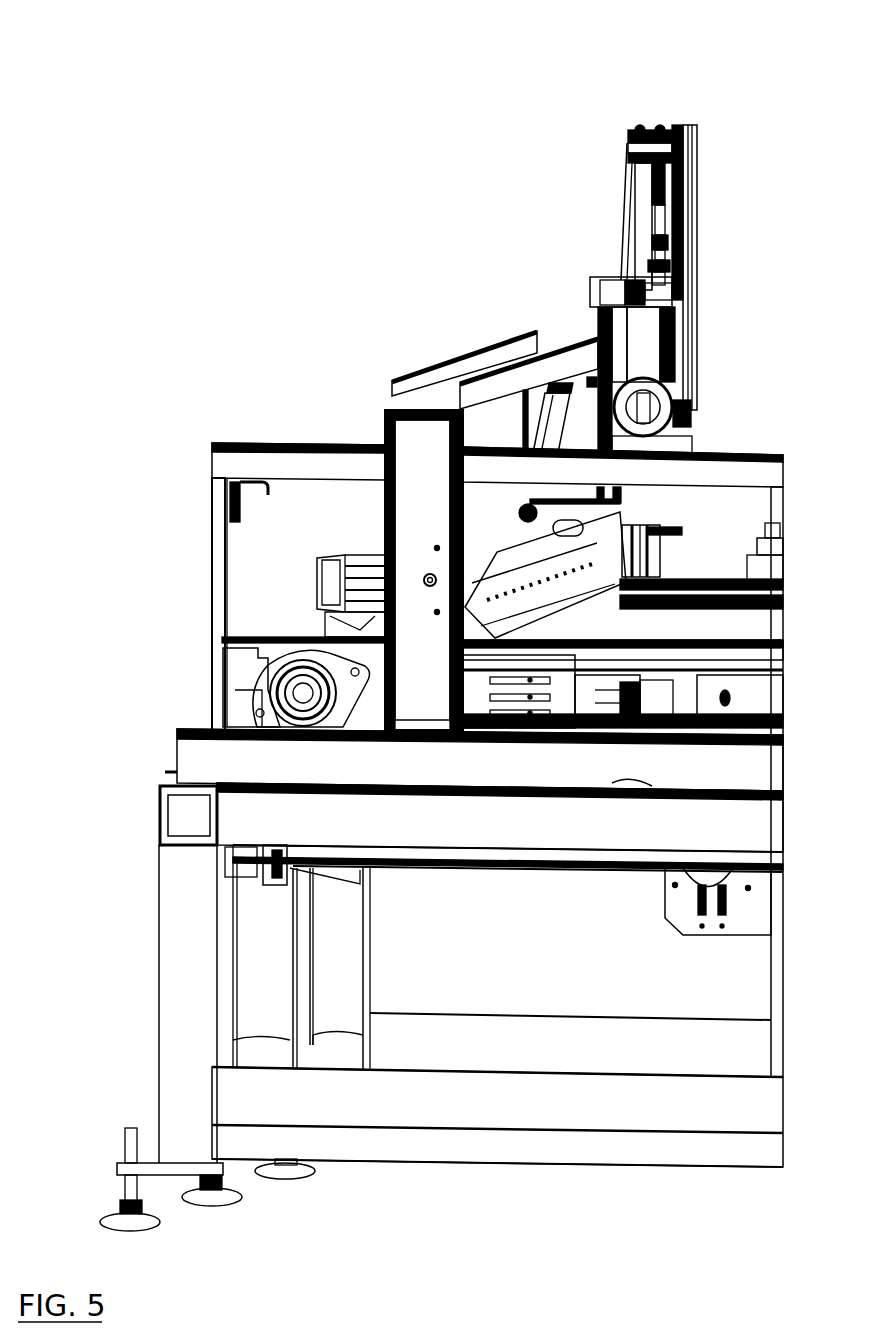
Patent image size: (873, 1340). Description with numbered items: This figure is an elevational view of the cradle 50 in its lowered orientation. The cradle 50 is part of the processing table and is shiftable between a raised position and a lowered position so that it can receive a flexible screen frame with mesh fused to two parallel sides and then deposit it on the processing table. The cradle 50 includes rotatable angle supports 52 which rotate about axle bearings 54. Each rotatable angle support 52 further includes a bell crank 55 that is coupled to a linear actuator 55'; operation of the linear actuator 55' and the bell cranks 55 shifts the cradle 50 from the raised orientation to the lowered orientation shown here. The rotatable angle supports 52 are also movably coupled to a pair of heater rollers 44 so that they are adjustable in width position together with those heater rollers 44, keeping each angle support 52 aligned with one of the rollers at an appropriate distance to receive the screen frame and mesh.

The heater rollers 44 is at (697, 250).
The cradle 50 is at (577, 548).
The rotatable angle support 52 is at (530, 557).
The axle bearing 54 is at (424, 577).
The bell crank 55 is at (371, 264).
The linear actuator 55' is at (368, 230).